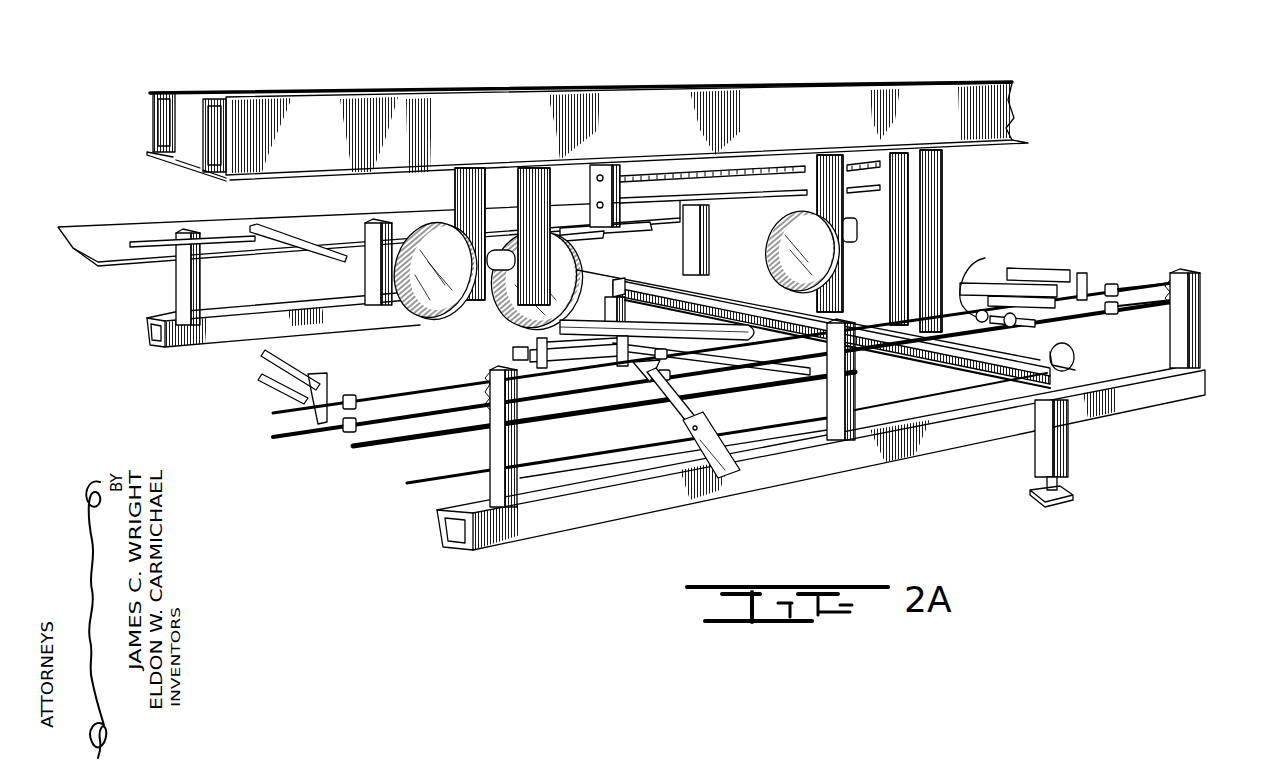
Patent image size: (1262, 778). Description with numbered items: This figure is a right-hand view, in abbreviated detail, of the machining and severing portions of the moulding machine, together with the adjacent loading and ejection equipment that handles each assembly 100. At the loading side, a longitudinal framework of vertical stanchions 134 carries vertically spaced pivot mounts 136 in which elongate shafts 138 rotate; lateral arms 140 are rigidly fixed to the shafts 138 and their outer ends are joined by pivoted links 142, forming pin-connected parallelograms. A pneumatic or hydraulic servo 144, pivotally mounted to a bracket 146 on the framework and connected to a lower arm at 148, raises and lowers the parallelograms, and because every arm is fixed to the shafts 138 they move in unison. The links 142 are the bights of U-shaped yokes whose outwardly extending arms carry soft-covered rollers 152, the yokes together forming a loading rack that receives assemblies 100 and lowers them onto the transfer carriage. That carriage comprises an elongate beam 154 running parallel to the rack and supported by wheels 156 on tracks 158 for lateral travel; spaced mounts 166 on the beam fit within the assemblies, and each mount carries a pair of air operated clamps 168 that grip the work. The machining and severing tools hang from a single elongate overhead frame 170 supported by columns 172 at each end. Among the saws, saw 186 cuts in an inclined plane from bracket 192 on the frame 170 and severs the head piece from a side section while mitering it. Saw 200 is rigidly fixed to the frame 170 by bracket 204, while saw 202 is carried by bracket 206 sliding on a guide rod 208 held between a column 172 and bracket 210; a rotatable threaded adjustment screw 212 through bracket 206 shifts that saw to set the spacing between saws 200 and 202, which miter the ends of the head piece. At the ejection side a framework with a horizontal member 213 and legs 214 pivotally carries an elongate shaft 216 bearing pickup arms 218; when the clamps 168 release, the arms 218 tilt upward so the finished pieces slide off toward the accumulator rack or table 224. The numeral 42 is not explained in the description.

The workpiece carriage 42 is at (517, 350).
The assembly 100 is at (615, 347).
The vertical stanchion 134 is at (491, 448).
The pivot mount 136 is at (490, 378).
The elongate shaft 138 is at (371, 401).
The lateral arm 140 is at (332, 391).
The link 142 is at (296, 392).
The servo 144 is at (666, 410).
The bracket 146 is at (686, 447).
The pivotal connection 148 is at (642, 377).
The roller 152 is at (270, 358).
The elongate beam 154 is at (933, 342).
The wheel 156 is at (1075, 348).
The track 158 is at (701, 293).
The mount 166 is at (962, 308).
The air operated clamp 168 is at (1036, 323).
The overhead frame 170 is at (183, 96).
The supporting column 172 is at (894, 161).
The saw 186 is at (430, 312).
The bracket 192 is at (455, 173).
The saw 200 is at (510, 312).
The saw 202 is at (769, 250).
The bracket 204 is at (529, 168).
The bracket 206 is at (823, 160).
The guide rod 208 is at (721, 200).
The bracket 210 is at (603, 170).
The adjustment screw 212 is at (713, 175).
The horizontal member 213 is at (176, 346).
The leg 214 is at (628, 319).
The elongate shaft 216 is at (222, 242).
The pickup arm 218 is at (300, 262).
The accumulator rack 224 is at (146, 233).